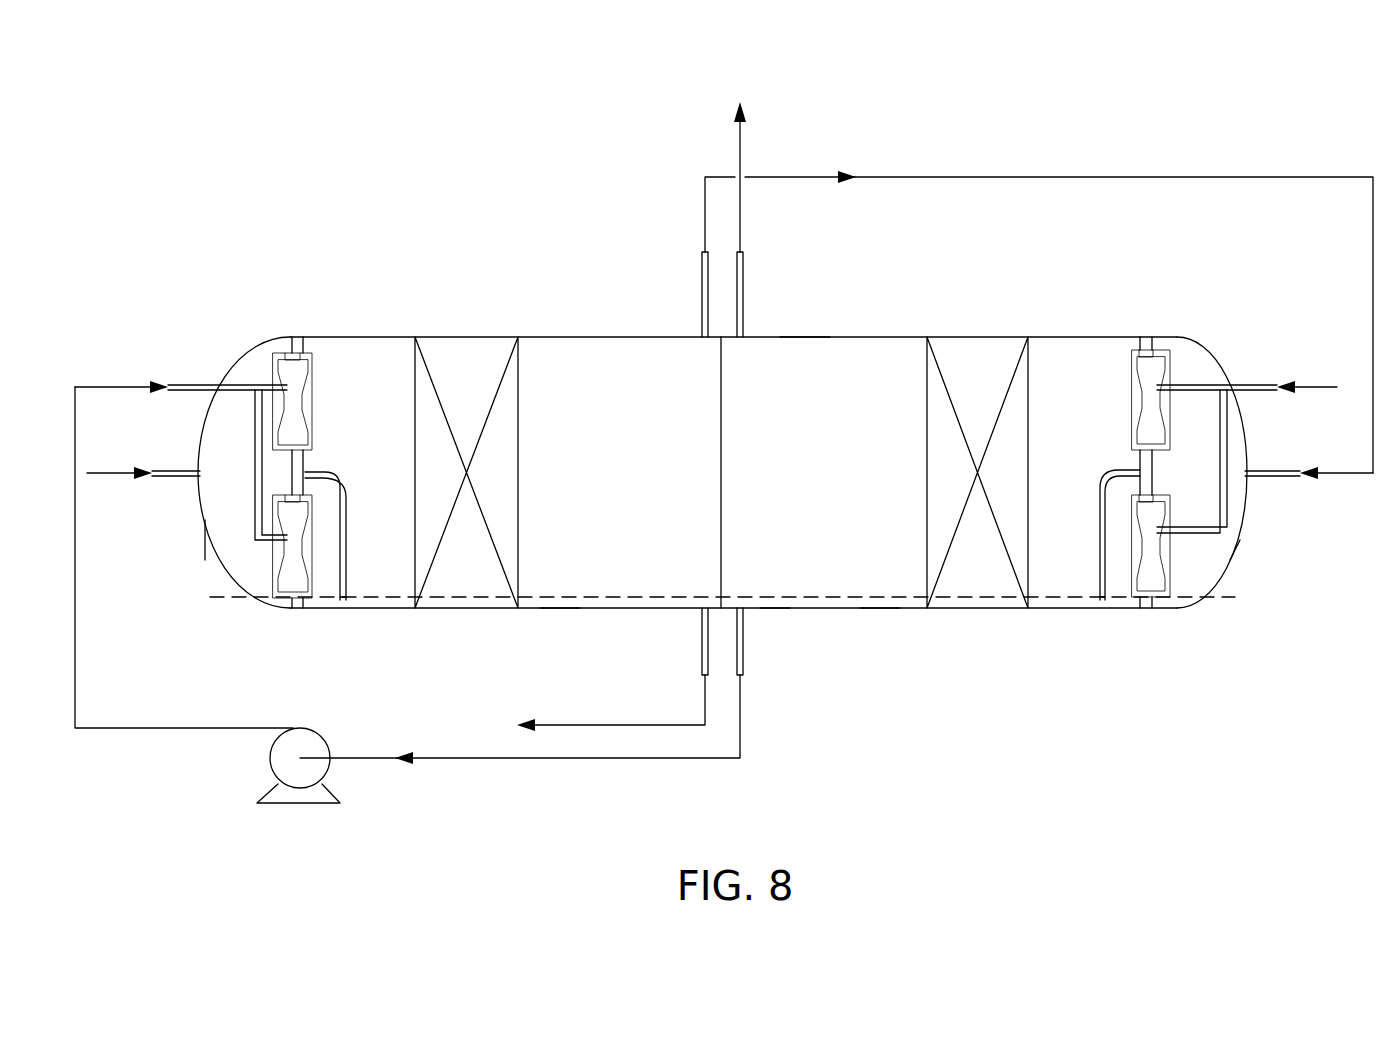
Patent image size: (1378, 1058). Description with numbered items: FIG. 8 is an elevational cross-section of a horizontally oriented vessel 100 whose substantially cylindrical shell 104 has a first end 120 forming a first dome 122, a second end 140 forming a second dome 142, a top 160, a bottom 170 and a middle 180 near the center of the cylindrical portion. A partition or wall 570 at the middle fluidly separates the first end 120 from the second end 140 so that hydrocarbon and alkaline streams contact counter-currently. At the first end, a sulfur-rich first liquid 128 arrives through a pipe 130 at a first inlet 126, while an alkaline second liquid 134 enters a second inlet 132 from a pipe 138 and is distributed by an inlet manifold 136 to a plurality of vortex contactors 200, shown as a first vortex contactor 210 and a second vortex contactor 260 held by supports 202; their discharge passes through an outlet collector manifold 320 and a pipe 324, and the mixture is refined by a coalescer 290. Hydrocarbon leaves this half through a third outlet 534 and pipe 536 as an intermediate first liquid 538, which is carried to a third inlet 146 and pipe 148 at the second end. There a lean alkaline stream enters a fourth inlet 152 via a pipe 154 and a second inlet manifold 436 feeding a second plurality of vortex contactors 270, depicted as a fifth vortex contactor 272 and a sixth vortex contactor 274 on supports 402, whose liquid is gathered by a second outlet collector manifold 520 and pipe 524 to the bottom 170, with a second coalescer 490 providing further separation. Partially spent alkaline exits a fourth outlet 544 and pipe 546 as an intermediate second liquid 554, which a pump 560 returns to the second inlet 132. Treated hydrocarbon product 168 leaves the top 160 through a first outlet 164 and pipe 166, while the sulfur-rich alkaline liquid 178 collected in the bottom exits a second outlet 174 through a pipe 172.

The vessel 100 is at (245, 245).
The substantially cylindrical shell 104 is at (584, 337).
The first end 120 is at (176, 558).
The first dome 122 is at (215, 563).
The first inlet 126 is at (198, 460).
The first liquid 128 is at (108, 478).
The pipe 130 is at (158, 470).
The second inlet 132 is at (227, 361).
The second liquid 134 is at (558, 605).
The inlet manifold 136 is at (217, 358).
The pipe 138 is at (176, 385).
The second end 140 is at (1256, 609).
The second dome 142 is at (1245, 437).
The third inlet 146 is at (1250, 480).
The pipe 148 is at (1300, 480).
The fourth inlet 152 is at (1226, 385).
The pipe 154 is at (1270, 385).
The top 160 is at (805, 337).
The first outlet 164 is at (743, 337).
The pipe 166 is at (743, 280).
The hydrocarbon product 168 is at (743, 201).
The bottom 170 is at (836, 612).
The pipe 172 is at (700, 640).
The second outlet 174 is at (700, 618).
The alkaline liquid 178 is at (605, 725).
The middle 180 is at (700, 398).
The plurality of vortex contactors 200 is at (332, 352).
The supports 202 is at (297, 343).
The first vortex contactor 210 is at (315, 395).
The second vortex contactor 260 is at (300, 563).
The second plurality of vortex contactors 270 is at (1155, 328).
The fifth vortex contactor 272 is at (1135, 397).
The sixth vortex contactor 274 is at (1160, 570).
The coalescer 290 is at (522, 470).
The outlet collector manifold 320 is at (315, 468).
The pipe 324 is at (348, 558).
The supports 402 is at (1154, 345).
The second inlet manifold 436 is at (1212, 415).
The second coalescer 490 is at (925, 472).
The second outlet collector manifold 520 is at (1135, 470).
The pipe 524 is at (1100, 548).
The third outlet 534 is at (702, 335).
The pipe 536 is at (702, 280).
The intermediate first liquid 538 is at (1040, 177).
The fourth outlet 544 is at (745, 615).
The pipe 546 is at (745, 640).
The intermediate second liquid 554 is at (688, 760).
The pump 560 is at (318, 730).
The wall 570 is at (724, 432).